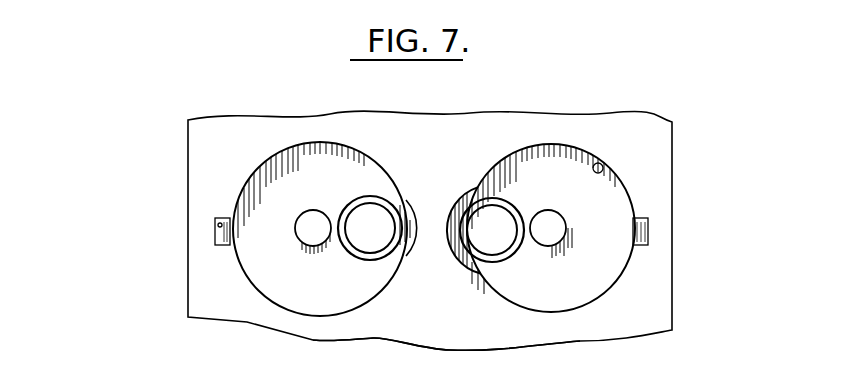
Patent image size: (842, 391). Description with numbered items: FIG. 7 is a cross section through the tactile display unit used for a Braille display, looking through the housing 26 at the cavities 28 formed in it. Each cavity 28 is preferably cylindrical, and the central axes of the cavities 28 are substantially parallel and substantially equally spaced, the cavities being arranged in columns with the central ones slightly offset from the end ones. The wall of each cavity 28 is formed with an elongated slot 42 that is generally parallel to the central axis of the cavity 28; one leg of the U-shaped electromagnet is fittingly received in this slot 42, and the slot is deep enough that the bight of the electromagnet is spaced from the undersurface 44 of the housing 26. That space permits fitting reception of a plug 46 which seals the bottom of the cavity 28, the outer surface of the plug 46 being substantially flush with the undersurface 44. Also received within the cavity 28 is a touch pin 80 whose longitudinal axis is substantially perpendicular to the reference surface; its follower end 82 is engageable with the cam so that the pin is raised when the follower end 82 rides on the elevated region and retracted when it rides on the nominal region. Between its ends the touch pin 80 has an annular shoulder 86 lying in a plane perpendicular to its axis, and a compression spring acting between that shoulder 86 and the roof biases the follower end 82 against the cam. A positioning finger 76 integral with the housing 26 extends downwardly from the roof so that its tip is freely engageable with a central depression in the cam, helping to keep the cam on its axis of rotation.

The housing 26 is at (675, 162).
The cavity 28 is at (603, 166).
The elongated slot 42 is at (216, 221).
The undersurface 44 is at (452, 325).
The plug 46 is at (317, 167).
The positioning finger 76 is at (313, 218).
The touch pin 80 is at (513, 200).
The follower end 82 is at (482, 232).
The annular shoulder 86 is at (377, 198).